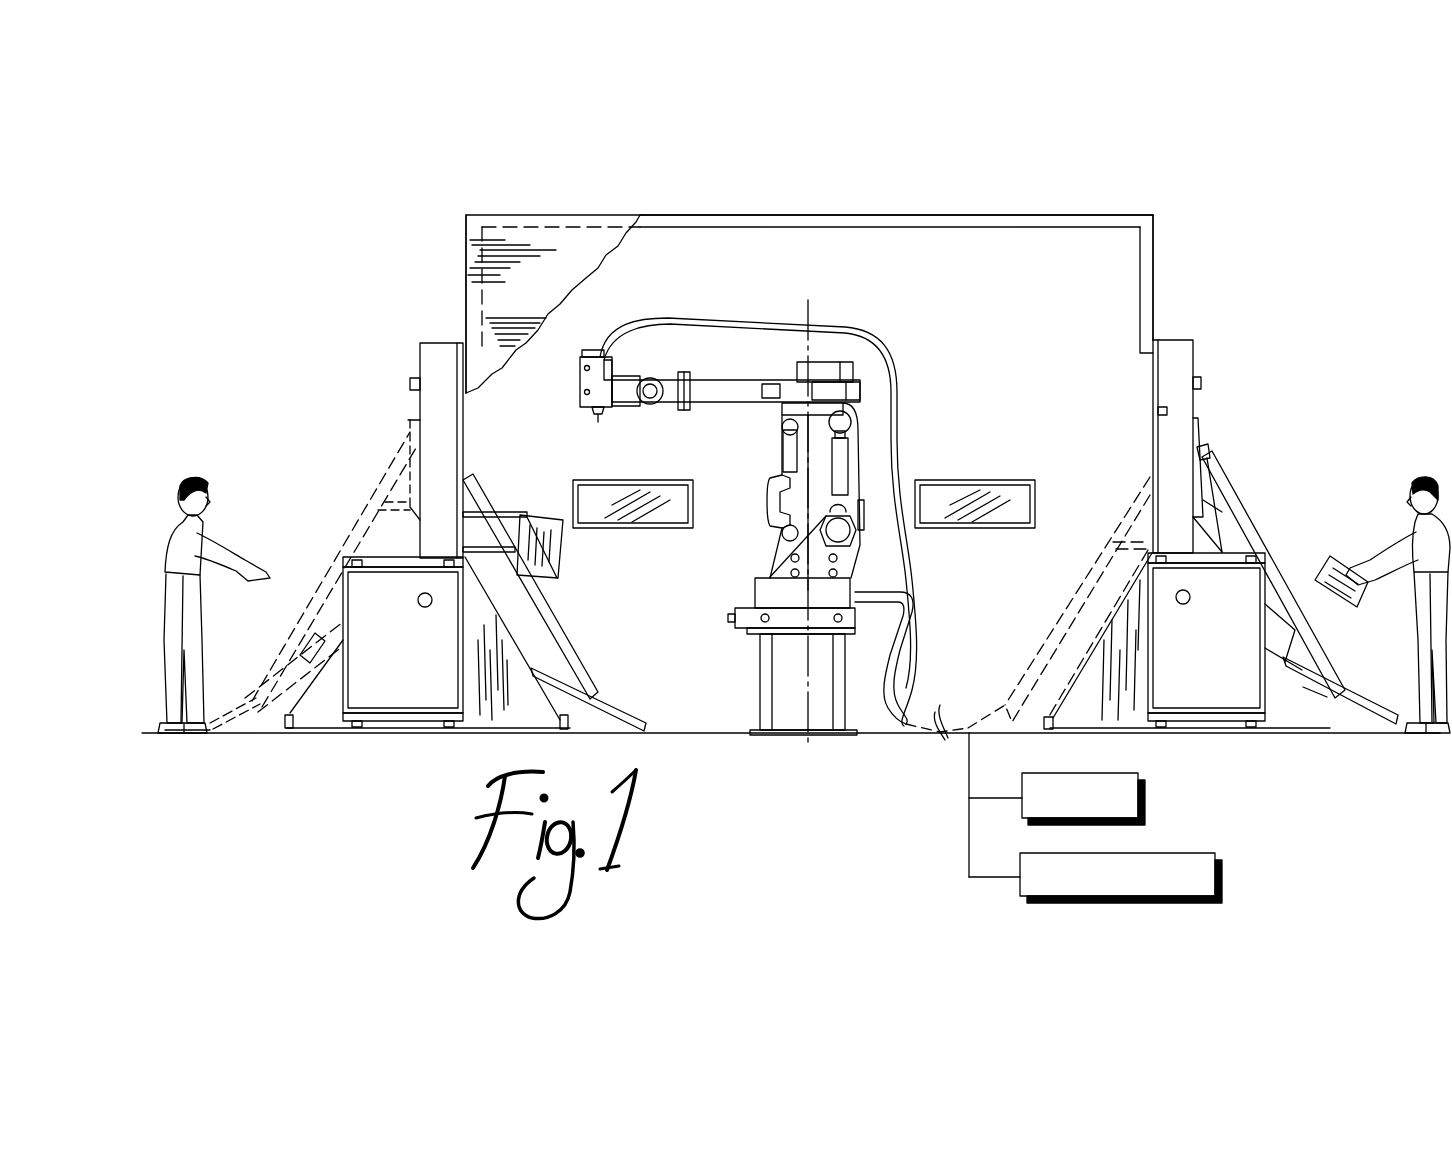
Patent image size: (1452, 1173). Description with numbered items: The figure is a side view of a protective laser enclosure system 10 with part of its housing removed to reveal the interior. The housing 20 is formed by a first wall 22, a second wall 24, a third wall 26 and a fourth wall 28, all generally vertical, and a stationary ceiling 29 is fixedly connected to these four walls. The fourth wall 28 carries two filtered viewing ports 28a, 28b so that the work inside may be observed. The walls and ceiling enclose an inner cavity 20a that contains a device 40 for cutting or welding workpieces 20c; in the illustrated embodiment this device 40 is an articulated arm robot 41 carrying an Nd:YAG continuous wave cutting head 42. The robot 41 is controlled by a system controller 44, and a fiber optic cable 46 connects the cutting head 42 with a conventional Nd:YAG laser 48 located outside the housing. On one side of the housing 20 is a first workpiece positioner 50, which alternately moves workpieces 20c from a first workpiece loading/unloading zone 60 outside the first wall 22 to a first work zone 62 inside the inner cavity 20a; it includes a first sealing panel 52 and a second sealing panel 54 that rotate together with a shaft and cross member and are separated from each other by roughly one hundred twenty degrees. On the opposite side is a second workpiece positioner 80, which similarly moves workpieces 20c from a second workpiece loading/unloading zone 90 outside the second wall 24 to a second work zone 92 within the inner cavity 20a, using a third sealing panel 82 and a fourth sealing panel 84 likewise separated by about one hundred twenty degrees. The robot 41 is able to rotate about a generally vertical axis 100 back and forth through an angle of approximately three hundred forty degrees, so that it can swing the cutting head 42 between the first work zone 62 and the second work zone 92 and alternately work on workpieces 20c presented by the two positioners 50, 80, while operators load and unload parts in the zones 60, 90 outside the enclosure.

The protective laser enclosure system 10 is at (1188, 288).
The housing 20 is at (1172, 258).
The inner cavity 20a is at (958, 258).
The workpieces 20c is at (548, 566).
The first wall 22 is at (462, 295).
The second wall 24 is at (1146, 328).
The third wall 26 is at (502, 252).
The fourth wall 28 is at (634, 252).
The filtered viewing port 28a is at (668, 492).
The filtered viewing port 28b is at (1022, 487).
The stationary ceiling 29 is at (712, 222).
The device for cutting or welding workpieces 40 is at (842, 350).
The articulated arm robot 41 is at (866, 368).
The cutting head 42 is at (594, 420).
The system controller 44 is at (1225, 874).
The fiber optic cable 46 is at (899, 432).
The Nd:YAG laser 48 is at (1145, 797).
The first workpiece positioner 50 is at (486, 484).
The first sealing panel 52 is at (620, 702).
The second sealing panel 54 is at (255, 700).
The first workpiece loading/unloading zone 60 is at (340, 553).
The first work zone 62 is at (538, 502).
The second workpiece positioner 80 is at (1234, 484).
The third sealing panel 82 is at (1000, 712).
The fourth sealing panel 84 is at (1372, 702).
The second workpiece loading/unloading zone 90 is at (1268, 512).
The second work zone 92 is at (1098, 536).
The vertical axis 100 is at (820, 315).